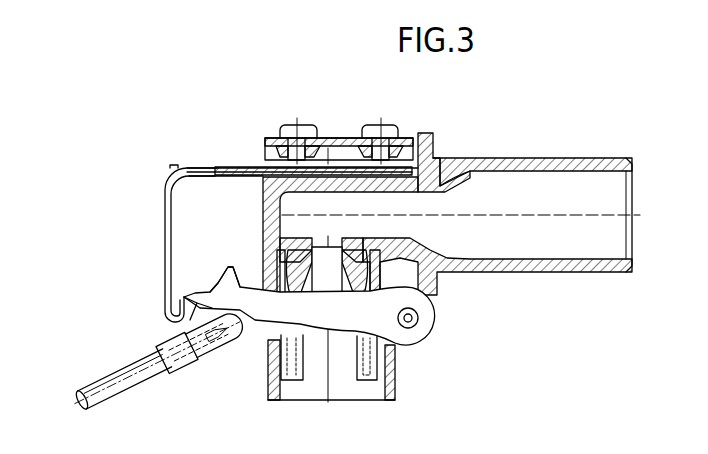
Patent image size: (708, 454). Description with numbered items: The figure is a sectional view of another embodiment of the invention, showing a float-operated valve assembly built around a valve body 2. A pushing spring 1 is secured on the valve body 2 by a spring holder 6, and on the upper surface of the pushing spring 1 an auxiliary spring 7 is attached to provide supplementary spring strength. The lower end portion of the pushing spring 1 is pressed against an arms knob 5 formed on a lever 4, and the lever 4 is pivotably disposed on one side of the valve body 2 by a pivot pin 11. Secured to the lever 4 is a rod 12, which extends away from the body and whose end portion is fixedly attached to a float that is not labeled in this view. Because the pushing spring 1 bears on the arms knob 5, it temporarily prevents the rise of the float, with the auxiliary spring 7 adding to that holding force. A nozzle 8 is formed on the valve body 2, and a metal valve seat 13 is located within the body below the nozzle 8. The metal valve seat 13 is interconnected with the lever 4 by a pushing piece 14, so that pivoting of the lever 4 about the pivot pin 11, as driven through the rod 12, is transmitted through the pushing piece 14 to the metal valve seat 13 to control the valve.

The pushing spring 1 is at (164, 238).
The valve body 2 is at (222, 169).
The lever 4 is at (212, 308).
The arms knob 5 is at (222, 270).
The spring holder 6 is at (338, 148).
The auxiliary spring 7 is at (270, 178).
The nozzle 8 is at (277, 220).
The pivot pin 11 is at (418, 338).
The rod 12 is at (130, 391).
The metal valve seat 13 is at (277, 239).
The pushing piece 14 is at (434, 320).